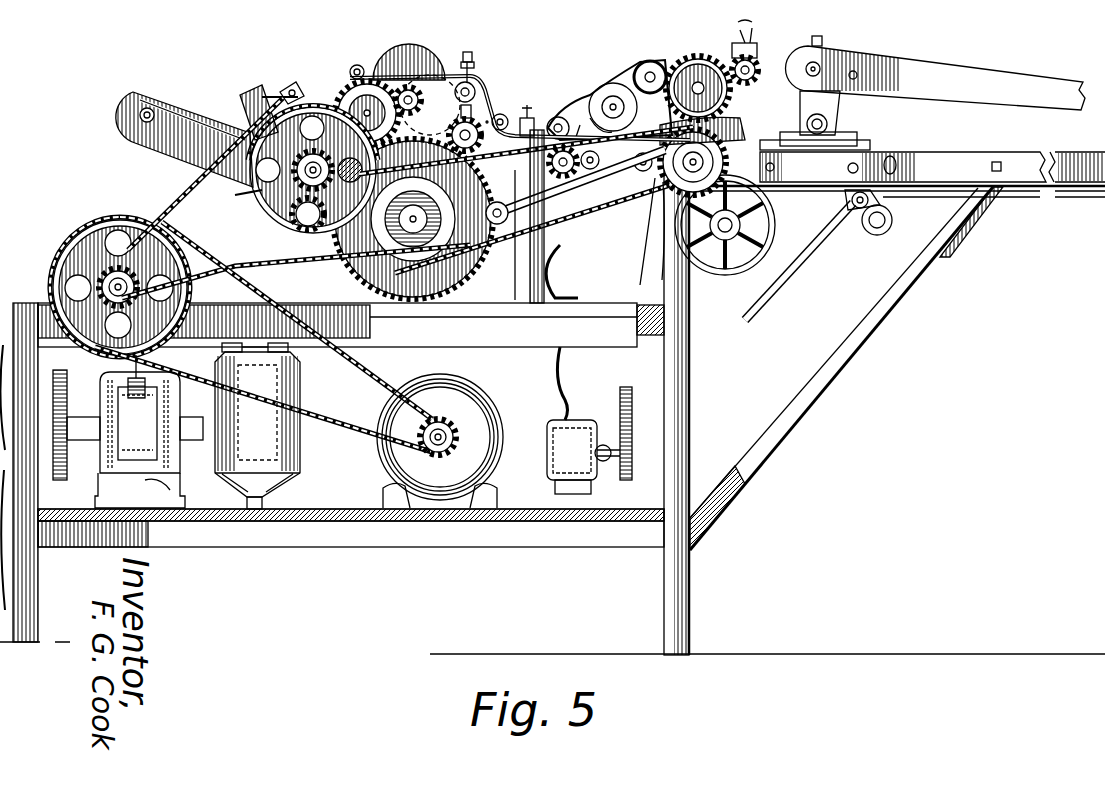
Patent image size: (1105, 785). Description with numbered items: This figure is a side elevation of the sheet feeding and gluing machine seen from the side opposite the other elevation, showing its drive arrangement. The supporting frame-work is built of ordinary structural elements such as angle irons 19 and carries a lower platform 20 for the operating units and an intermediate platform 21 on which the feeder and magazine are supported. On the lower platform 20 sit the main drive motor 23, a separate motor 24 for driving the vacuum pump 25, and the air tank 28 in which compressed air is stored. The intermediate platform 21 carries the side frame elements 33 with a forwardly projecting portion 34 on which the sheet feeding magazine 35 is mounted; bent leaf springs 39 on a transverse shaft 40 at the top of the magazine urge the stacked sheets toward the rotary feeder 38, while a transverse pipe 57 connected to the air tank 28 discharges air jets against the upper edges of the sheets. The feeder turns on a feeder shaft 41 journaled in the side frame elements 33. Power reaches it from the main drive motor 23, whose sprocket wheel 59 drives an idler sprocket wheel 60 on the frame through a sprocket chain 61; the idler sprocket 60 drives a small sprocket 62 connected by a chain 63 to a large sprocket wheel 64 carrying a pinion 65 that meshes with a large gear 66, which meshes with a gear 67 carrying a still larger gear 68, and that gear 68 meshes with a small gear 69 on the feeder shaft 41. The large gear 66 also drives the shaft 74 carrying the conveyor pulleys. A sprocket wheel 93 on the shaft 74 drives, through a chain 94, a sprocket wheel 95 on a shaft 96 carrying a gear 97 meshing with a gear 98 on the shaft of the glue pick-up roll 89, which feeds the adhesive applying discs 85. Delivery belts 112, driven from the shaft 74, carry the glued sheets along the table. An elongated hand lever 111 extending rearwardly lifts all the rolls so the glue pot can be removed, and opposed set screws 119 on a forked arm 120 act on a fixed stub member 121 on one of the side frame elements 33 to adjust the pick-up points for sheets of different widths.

The angle irons 19 is at (38, 550).
The lower platform 20 is at (335, 523).
The intermediate platform 21 is at (405, 330).
The main drive motor 23 is at (465, 396).
The separate motor 24 is at (118, 382).
The vacuum pump 25 is at (98, 465).
The air tank 28 is at (279, 450).
The side frame elements 33 is at (538, 250).
The forwardly projecting portion 34 is at (140, 136).
The sheet feeding magazine 35 is at (260, 100).
The rotary feeder 38 is at (428, 62).
The bent leaf springs 39 is at (313, 169).
The transverse shaft 40 is at (298, 97).
The feeder shaft 41 is at (397, 62).
The transverse pipe 57 is at (358, 67).
The sprocket wheel 59 is at (412, 448).
The idler sprocket wheel 60 is at (118, 222).
The sprocket chain 61 is at (368, 366).
The small sprocket 62 is at (150, 283).
The chain 63 is at (195, 192).
The large sprocket wheel 64 is at (237, 201).
The pinion 65 is at (296, 261).
The large gear 66 is at (489, 120).
The gear 67 is at (300, 98).
The still larger gear 68 is at (345, 92).
The small gear 69 is at (438, 119).
The shaft 74 is at (413, 219).
The adhesive applying rollers or discs 85 is at (596, 76).
The glue pick-up roll 89 is at (660, 66).
The sprocket wheel 93 is at (440, 205).
The chain 94 is at (643, 258).
The sprocket wheel 95 is at (662, 268).
The shaft 96 is at (727, 225).
The gear 97 is at (748, 190).
The gear 98 is at (690, 64).
The elongated hand lever 111 is at (985, 82).
The delivery belts 112 is at (822, 235).
The opposed set screws 119 is at (471, 56).
The forked arm 120 is at (470, 52).
The fixed stub member 121 is at (472, 88).